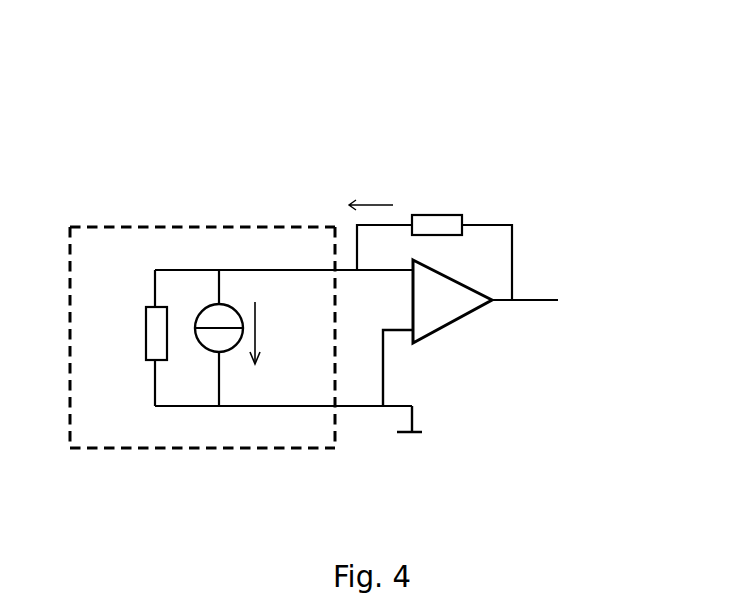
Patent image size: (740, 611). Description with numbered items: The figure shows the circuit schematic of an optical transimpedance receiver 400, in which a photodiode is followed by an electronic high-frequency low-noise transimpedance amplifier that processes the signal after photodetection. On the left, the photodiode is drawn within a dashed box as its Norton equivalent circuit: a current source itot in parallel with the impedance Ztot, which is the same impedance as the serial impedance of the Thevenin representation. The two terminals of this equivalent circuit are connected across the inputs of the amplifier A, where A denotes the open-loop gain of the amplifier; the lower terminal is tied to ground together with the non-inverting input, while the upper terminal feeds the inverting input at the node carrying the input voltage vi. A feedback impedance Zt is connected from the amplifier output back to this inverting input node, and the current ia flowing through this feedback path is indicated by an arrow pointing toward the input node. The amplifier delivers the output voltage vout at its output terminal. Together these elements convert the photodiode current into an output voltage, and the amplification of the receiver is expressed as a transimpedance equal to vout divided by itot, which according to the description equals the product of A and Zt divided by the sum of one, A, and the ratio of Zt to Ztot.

The optical transimpedance receiver 400 is at (201, 89).
The element photodiode is at (241, 318).
The photodiode impedance Ztot is at (129, 333).
The current source itot is at (257, 333).
The open-loop gain of the amplifier A is at (452, 301).
The amplifier input voltage vi is at (382, 290).
The feedback impedance Zt is at (434, 243).
The amplifier input current ia is at (371, 193).
The output voltage vout is at (556, 301).